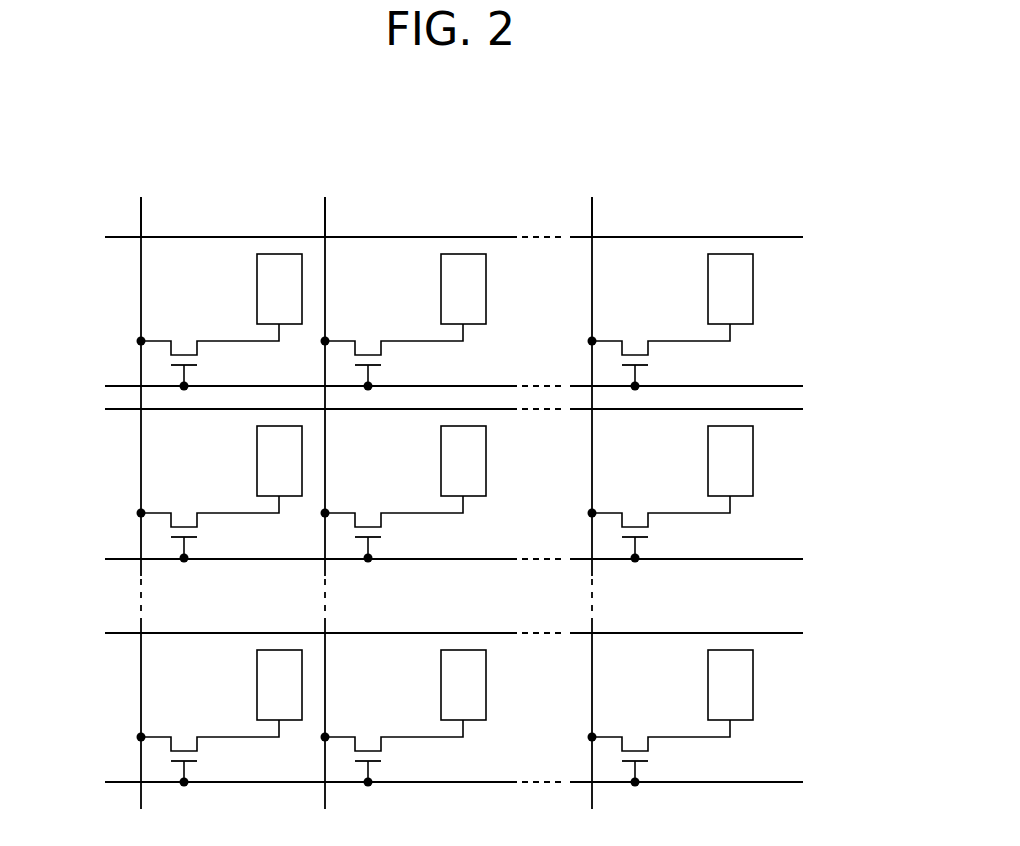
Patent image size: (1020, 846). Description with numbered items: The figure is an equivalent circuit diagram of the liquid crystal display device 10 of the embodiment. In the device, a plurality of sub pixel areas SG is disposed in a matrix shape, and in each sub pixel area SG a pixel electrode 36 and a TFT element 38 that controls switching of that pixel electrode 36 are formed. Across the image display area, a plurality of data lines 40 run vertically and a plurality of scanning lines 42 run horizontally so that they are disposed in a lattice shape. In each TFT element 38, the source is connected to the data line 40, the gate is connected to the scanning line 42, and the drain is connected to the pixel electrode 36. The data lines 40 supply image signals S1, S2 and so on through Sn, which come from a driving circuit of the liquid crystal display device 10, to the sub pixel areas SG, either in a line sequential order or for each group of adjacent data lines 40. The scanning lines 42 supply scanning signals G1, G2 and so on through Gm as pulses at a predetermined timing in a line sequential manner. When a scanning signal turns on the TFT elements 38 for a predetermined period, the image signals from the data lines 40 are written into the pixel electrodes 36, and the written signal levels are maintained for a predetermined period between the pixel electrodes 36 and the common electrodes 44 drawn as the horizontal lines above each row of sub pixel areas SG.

The liquid crystal display device 10 is at (770, 147).
The pixel electrode 36 is at (265, 285).
The TFT element 38 is at (192, 349).
The data line 40 is at (141, 217).
The scanning line 42 is at (122, 386).
The common electrode 44 is at (128, 237).
The image signal S1 is at (140, 200).
The image signal S2 is at (328, 200).
The image signal Sn is at (594, 200).
The scanning signal G1 is at (104, 388).
The scanning signal G2 is at (104, 558).
The scanning signal Gm is at (99, 783).
The sub pixel area SG is at (787, 288).